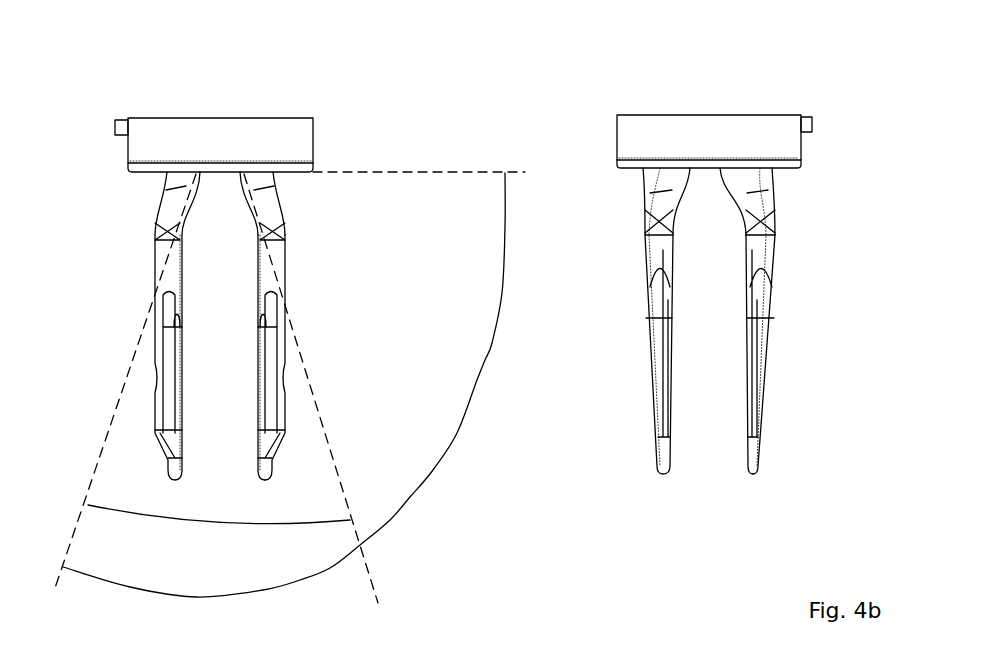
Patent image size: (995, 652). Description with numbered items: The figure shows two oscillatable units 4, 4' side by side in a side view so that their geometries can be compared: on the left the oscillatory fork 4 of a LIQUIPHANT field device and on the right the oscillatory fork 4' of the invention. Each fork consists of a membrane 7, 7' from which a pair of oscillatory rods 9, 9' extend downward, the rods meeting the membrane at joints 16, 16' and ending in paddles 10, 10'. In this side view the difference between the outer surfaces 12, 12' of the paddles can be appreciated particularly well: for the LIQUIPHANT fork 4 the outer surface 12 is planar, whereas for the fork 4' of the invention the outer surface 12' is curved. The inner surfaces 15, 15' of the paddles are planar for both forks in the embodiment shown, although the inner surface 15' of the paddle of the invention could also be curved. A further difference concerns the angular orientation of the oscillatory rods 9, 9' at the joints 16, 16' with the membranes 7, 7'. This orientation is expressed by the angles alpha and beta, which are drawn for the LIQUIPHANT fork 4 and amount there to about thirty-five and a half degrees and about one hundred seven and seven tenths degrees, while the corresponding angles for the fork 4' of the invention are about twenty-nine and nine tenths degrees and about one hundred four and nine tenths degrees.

The oscillatory fork 4 is at (290, 309).
The oscillatory fork of the invention 4' is at (764, 280).
The membrane 7 is at (150, 326).
The membrane 7' is at (630, 321).
The oscillatory rod 9 is at (292, 337).
The oscillatory rod 9' is at (790, 349).
The paddle 10 is at (292, 368).
The paddle 10' is at (791, 383).
The outer surface of the paddle 12 is at (314, 352).
The outer surface of the paddle 12' is at (803, 317).
The inner surface of the paddle 15 is at (237, 357).
The inner surface of the paddle 15' is at (725, 354).
The joint 16 is at (307, 206).
The joint 16' is at (801, 201).